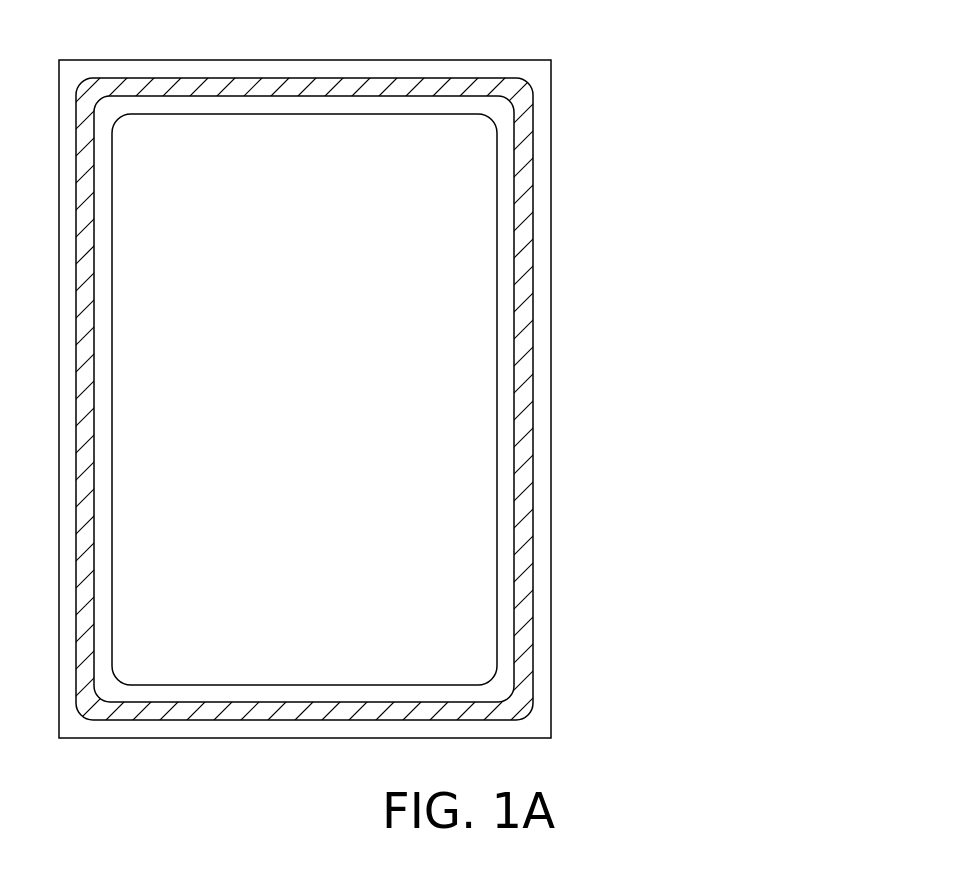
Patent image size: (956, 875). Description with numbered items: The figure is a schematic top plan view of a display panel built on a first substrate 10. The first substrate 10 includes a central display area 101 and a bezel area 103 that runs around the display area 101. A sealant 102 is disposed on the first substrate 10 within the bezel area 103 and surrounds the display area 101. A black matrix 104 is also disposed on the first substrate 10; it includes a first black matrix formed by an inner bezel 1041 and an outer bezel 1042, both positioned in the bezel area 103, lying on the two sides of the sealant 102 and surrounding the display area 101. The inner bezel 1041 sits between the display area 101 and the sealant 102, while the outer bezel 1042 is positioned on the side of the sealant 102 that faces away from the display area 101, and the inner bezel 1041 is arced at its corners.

The first substrate 10 is at (94, 42).
The display area 101 is at (425, 422).
The sealant 102 is at (517, 333).
The bezel area 103 is at (553, 272).
The black matrix 104 is at (478, 400).
The inner bezel 1041 is at (506, 211).
The outer bezel 1042 is at (546, 168).